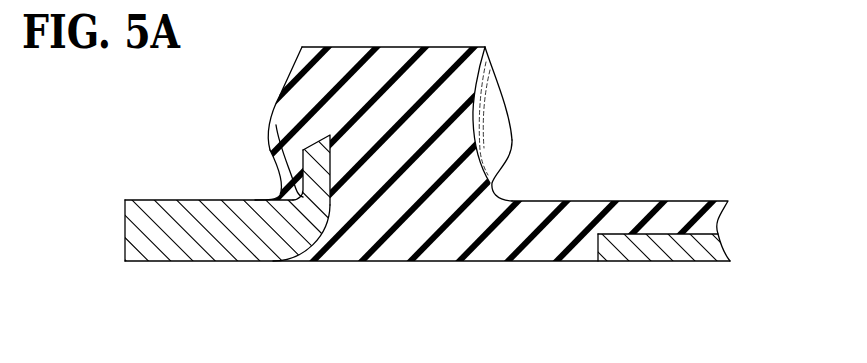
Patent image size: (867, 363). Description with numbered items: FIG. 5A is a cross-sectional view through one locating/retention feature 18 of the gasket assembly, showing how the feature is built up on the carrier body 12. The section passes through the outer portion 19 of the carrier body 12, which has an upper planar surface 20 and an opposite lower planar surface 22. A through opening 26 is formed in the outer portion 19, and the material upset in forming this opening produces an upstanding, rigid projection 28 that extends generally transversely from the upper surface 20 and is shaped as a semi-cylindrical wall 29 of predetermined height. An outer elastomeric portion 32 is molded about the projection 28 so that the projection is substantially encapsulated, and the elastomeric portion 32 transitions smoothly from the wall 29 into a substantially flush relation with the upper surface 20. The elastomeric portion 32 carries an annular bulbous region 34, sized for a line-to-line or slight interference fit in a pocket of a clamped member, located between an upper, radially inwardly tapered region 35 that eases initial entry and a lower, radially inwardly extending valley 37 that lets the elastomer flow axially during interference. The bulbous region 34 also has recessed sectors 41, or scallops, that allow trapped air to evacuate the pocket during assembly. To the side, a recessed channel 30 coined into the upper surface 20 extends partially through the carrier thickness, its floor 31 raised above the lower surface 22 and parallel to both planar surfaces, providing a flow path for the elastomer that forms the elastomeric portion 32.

The carrier body 12 is at (132, 237).
The locating/retention feature 18 is at (540, 115).
The outer portion 19 is at (225, 245).
The upper planar surface 20 is at (175, 200).
The lower planar surface 22 is at (192, 261).
The through opening 26 is at (314, 235).
The projection 28 is at (300, 150).
The semi-cylindrical wall 29 is at (280, 175).
The recessed channel 30 is at (662, 233).
The floor 31 is at (617, 233).
The elastomeric portion 32 is at (488, 50).
The bulbous region 34 is at (272, 125).
The tapered region 35 is at (297, 64).
The valley 37 is at (312, 181).
The recessed sector 41 is at (474, 120).